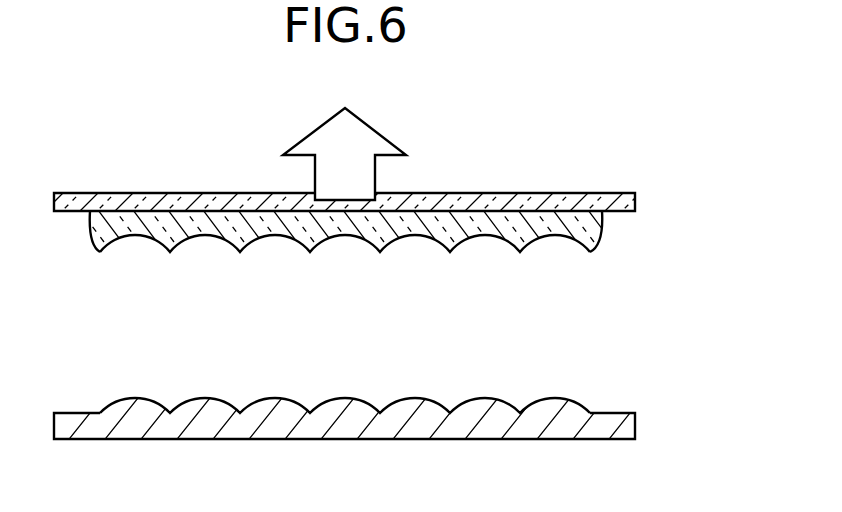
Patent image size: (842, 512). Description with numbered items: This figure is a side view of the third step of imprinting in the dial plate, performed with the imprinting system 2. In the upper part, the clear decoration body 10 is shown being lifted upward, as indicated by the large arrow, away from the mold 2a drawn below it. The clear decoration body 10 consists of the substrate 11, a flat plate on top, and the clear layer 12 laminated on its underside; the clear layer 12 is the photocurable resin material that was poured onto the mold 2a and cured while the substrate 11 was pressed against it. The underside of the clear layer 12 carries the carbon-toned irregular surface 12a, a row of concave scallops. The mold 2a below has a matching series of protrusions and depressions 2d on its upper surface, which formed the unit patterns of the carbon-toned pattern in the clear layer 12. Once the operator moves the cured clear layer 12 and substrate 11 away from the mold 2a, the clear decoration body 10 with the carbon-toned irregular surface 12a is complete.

The clear decoration body 10 is at (405, 244).
The substrate 11 is at (639, 203).
The clear layer 12 is at (390, 269).
The carbon-toned irregular surface 12a is at (340, 240).
The imprinting system 2 is at (393, 354).
The mold 2a is at (640, 426).
The protrusions and depressions 2d is at (415, 398).